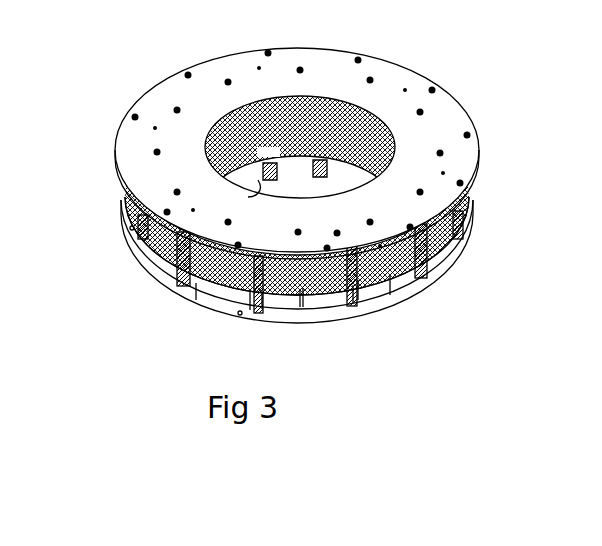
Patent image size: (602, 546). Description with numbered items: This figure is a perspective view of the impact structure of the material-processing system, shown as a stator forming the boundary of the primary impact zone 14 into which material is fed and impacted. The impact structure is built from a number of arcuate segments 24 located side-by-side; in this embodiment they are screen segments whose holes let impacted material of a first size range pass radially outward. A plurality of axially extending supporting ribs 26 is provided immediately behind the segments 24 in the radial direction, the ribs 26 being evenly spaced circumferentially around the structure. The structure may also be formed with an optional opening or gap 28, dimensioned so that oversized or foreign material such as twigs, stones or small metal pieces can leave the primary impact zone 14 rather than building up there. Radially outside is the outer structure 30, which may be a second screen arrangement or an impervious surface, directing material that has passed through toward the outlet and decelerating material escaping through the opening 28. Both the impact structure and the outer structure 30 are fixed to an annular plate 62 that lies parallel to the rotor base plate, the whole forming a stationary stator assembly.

The primary impact zone 14 is at (353, 113).
The arcuate segments 24 is at (222, 274).
The supporting ribs 26 is at (177, 260).
The opening or gap 28 is at (248, 197).
The outer structure 30 is at (452, 238).
The annular plate 62 is at (450, 115).